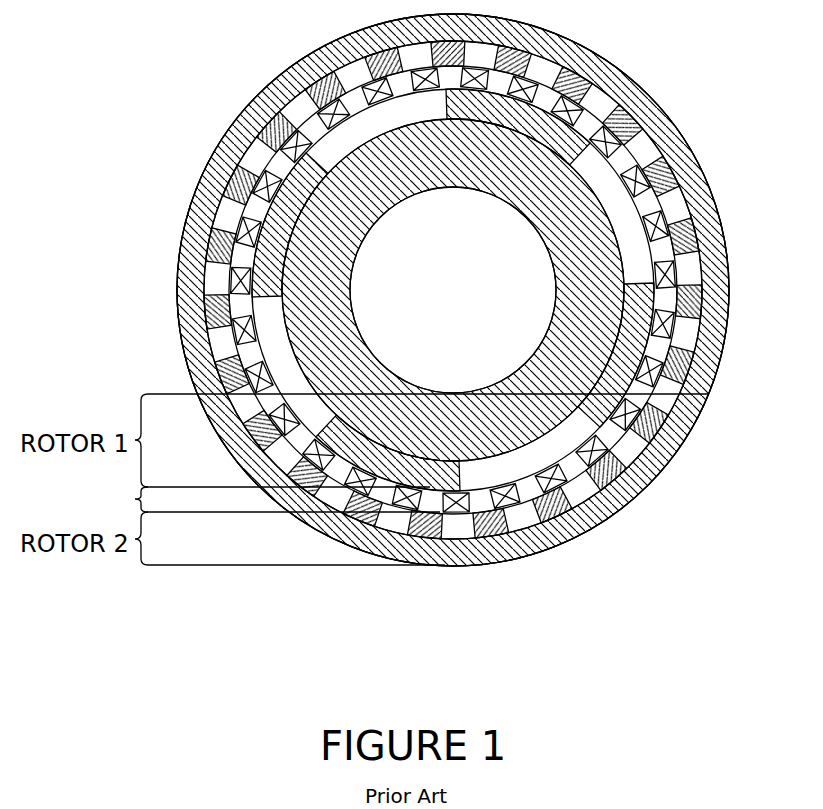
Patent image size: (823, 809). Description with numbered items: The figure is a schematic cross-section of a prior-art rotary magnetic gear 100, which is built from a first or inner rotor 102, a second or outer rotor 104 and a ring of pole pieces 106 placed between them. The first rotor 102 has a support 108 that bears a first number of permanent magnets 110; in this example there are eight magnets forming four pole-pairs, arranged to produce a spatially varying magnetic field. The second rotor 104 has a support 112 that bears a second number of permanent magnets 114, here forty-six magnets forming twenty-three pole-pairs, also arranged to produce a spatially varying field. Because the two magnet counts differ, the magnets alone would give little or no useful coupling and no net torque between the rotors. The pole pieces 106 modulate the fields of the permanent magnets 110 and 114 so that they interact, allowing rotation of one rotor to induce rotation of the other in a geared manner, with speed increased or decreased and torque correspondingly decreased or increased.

The rotary magnetic gear 100 is at (495, 598).
The first rotor 102 is at (553, 335).
The second rotor 104 is at (284, 68).
The pole pieces 106 is at (702, 388).
The support 108 is at (450, 393).
The permanent magnets 110 is at (268, 313).
The support 112 is at (683, 157).
The permanent magnets 114 is at (693, 265).